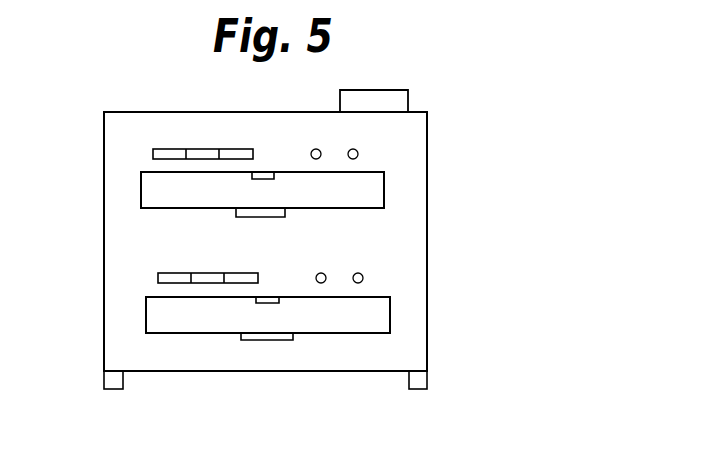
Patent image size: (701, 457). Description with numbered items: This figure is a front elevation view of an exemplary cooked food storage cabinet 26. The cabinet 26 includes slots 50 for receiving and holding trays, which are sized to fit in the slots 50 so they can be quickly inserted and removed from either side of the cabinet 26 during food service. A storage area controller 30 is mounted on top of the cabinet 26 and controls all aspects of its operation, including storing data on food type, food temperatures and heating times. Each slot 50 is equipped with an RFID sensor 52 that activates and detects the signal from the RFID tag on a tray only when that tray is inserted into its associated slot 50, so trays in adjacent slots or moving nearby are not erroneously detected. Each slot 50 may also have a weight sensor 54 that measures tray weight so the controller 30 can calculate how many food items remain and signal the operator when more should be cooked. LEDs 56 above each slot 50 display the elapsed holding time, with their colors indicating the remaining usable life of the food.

The food storage cabinet 26 is at (412, 255).
The storage area controller 30 is at (408, 95).
The slot 50 is at (141, 184).
The RFID sensor 52 is at (272, 180).
The weight sensor 54 is at (285, 217).
The LEDs 56 is at (192, 149).